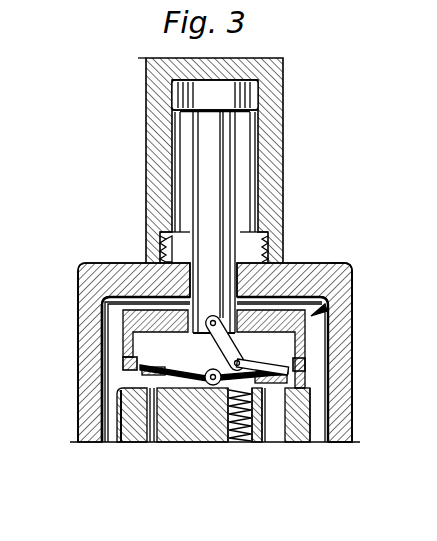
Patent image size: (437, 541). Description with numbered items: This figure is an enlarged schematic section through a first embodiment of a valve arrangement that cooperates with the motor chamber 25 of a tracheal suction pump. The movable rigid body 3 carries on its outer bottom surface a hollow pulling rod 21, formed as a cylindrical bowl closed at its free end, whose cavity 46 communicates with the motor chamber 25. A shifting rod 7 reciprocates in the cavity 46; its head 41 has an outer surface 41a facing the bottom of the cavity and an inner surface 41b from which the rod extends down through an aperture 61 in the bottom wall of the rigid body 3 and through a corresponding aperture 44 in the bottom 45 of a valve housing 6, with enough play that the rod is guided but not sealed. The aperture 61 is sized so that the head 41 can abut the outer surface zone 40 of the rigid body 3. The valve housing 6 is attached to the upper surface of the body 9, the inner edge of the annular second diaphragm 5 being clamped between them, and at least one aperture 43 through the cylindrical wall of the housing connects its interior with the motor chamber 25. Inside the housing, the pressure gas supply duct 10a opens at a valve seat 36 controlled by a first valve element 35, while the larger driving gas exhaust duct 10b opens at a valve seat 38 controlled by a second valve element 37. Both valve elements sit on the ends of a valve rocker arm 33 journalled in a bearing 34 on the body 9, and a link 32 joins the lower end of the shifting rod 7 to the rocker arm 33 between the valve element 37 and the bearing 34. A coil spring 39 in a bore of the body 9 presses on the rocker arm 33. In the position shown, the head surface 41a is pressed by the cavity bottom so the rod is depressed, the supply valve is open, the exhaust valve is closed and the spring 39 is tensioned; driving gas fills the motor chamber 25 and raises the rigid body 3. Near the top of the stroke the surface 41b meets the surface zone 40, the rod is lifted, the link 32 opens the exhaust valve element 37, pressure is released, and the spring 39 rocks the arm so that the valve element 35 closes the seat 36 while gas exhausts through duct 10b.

The rigid body 3 is at (350, 440).
The annular second diaphragm 5 is at (92, 432).
The valve housing 6 is at (326, 306).
The shifting rod 7 is at (220, 184).
The body 9 is at (135, 428).
The pressure gas supply duct 10a is at (153, 428).
The driving gas exhaust duct 10b is at (318, 430).
The pulling rod 21 is at (270, 212).
The motor chamber 25 is at (106, 332).
The link 32 is at (338, 333).
The valve rocker arm 33 is at (196, 374).
The bearing 34 is at (207, 432).
The first valve element 35 is at (122, 386).
The valve seat 36 is at (162, 374).
The second valve element 37 is at (286, 422).
The valve seat 38 is at (289, 380).
The coil spring 39 is at (245, 440).
The outer surface zone 40 is at (263, 254).
The head 41 is at (195, 91).
The outer surface of head 41a is at (232, 76).
The inner surface of head 41b is at (243, 118).
The aperture 43 is at (123, 364).
The aperture 44 is at (107, 301).
The bottom of housing 45 is at (330, 267).
The cavity 46 is at (188, 176).
The aperture 61 is at (172, 265).